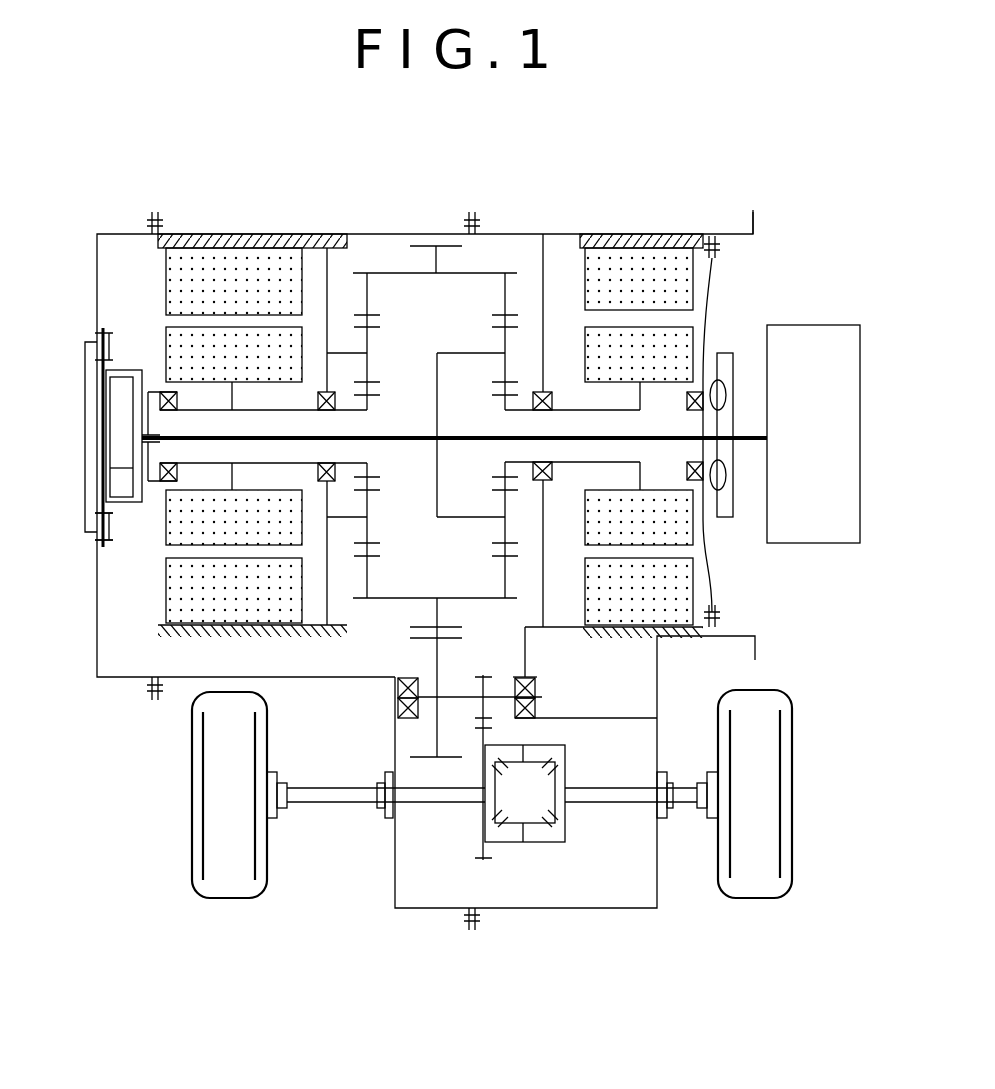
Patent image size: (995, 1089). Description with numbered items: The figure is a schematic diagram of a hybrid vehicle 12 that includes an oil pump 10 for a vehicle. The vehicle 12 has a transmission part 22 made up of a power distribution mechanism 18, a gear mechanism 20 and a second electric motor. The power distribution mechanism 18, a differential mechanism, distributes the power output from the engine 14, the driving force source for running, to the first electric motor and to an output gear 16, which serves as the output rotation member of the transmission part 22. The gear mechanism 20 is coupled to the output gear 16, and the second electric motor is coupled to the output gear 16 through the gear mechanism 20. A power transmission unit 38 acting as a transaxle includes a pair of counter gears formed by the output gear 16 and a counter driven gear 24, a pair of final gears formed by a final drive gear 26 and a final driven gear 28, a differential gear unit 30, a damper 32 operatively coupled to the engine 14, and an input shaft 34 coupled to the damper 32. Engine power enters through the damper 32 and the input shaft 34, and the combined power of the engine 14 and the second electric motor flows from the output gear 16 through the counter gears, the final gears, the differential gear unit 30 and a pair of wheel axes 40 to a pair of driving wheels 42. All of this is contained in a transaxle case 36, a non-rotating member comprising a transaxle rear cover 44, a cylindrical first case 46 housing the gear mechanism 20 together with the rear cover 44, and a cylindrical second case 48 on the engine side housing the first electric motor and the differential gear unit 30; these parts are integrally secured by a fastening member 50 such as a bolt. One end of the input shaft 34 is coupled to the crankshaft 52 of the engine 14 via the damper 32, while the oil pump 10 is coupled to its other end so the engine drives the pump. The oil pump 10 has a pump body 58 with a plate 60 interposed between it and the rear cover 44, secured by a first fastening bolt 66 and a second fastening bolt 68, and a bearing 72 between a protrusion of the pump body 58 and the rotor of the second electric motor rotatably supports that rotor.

The oil pump 10 is at (118, 350).
The hybrid vehicle 12 is at (744, 210).
The engine 14 is at (812, 333).
The output gear 16 is at (452, 244).
The power distribution mechanism 18 is at (509, 255).
The gear mechanism 20 is at (367, 258).
The transmission part 22 is at (392, 225).
The counter driven gear 24 is at (445, 640).
The final drive gear 26 is at (490, 683).
The final driven gear 28 is at (491, 725).
The differential gear unit 30 is at (564, 848).
The damper 32 is at (726, 513).
The input shaft 34 is at (683, 435).
The transaxle case 36 is at (645, 224).
The power transmission unit 38 is at (452, 848).
The wheel axes 40 is at (327, 800).
The driving wheels 42 is at (225, 885).
The transaxle rear cover 44 is at (97, 290).
The first case 46 is at (240, 237).
The second case 48 is at (590, 237).
The fastening member 50 is at (148, 218).
The crankshaft 52 is at (750, 432).
The pump body 58 is at (128, 510).
The plate 60 is at (93, 472).
The first fastening bolt 66 is at (93, 512).
The second fastening bolt 68 is at (106, 547).
The bearing 72 is at (177, 398).